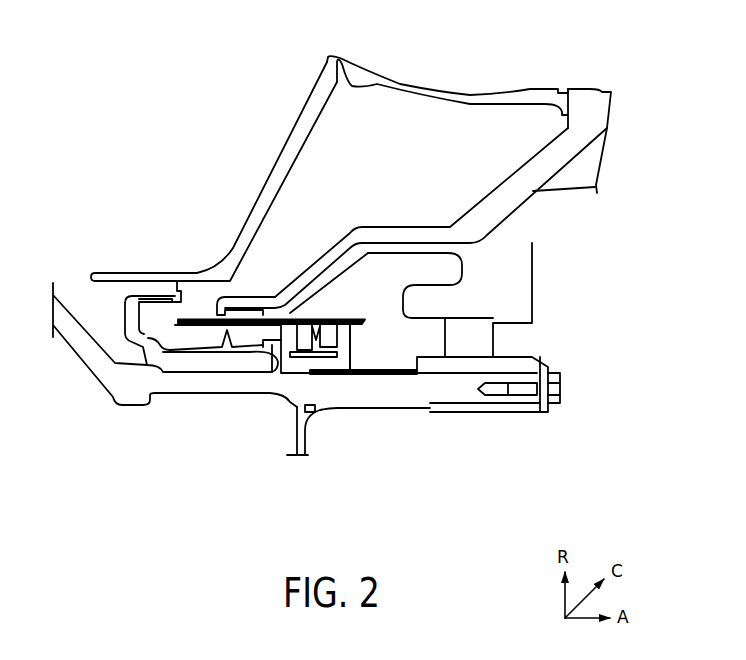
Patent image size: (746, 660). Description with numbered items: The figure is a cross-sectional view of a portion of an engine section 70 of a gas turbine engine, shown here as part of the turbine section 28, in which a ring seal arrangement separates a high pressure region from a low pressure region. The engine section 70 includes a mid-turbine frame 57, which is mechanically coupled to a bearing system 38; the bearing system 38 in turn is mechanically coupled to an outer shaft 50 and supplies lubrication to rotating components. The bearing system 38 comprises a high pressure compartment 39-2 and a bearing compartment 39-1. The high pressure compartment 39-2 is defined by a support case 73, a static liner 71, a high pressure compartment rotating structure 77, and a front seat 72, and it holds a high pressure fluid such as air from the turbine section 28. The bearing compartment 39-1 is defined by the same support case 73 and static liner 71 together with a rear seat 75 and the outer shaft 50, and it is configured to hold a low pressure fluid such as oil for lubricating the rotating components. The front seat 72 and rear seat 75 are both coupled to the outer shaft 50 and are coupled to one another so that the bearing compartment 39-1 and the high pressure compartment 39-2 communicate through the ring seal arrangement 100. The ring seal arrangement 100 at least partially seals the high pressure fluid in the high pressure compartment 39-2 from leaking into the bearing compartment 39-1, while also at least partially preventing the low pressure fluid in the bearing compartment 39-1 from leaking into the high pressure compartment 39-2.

The engine section 70 is at (135, 72).
The turbine section 28 is at (358, 40).
The mid-turbine frame 57 is at (268, 210).
The bearing system 38 is at (262, 278).
The support case 73 is at (323, 257).
The static liner 71 is at (300, 322).
The ring seal arrangement 100 is at (327, 314).
The bearing compartment 39-1 is at (408, 350).
The high pressure compartment 39-2 is at (169, 331).
The high pressure compartment rotating structure 77 is at (220, 350).
The front seat 72 is at (288, 362).
The rear seat 75 is at (350, 363).
The outer shaft 50 is at (407, 392).